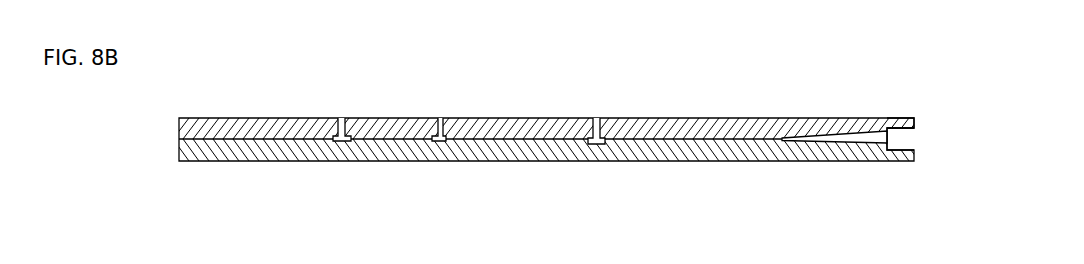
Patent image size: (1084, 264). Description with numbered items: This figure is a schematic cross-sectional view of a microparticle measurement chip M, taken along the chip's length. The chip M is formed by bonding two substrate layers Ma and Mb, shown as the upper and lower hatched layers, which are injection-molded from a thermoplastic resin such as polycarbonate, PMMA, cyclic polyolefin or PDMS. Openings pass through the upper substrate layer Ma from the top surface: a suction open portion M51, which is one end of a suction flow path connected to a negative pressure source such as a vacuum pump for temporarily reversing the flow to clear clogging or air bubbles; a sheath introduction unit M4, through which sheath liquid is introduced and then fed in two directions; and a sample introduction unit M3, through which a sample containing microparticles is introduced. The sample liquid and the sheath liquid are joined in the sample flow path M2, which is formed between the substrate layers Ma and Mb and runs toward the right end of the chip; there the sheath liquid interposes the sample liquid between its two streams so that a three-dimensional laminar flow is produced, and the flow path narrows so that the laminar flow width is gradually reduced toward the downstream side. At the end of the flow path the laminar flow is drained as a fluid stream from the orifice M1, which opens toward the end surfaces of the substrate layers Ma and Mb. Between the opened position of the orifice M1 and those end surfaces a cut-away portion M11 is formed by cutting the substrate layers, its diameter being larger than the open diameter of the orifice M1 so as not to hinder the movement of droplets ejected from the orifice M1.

The microparticle measurement chip M is at (566, 126).
The substrate layer Ma is at (224, 117).
The substrate layer Mb is at (225, 162).
The suction open portion M51 is at (342, 117).
The sheath introduction unit M4 is at (441, 117).
The sample introduction unit M3 is at (602, 117).
The sample flow path M2 is at (849, 137).
The cut-away portion M11 is at (898, 126).
The orifice M1 is at (889, 135).